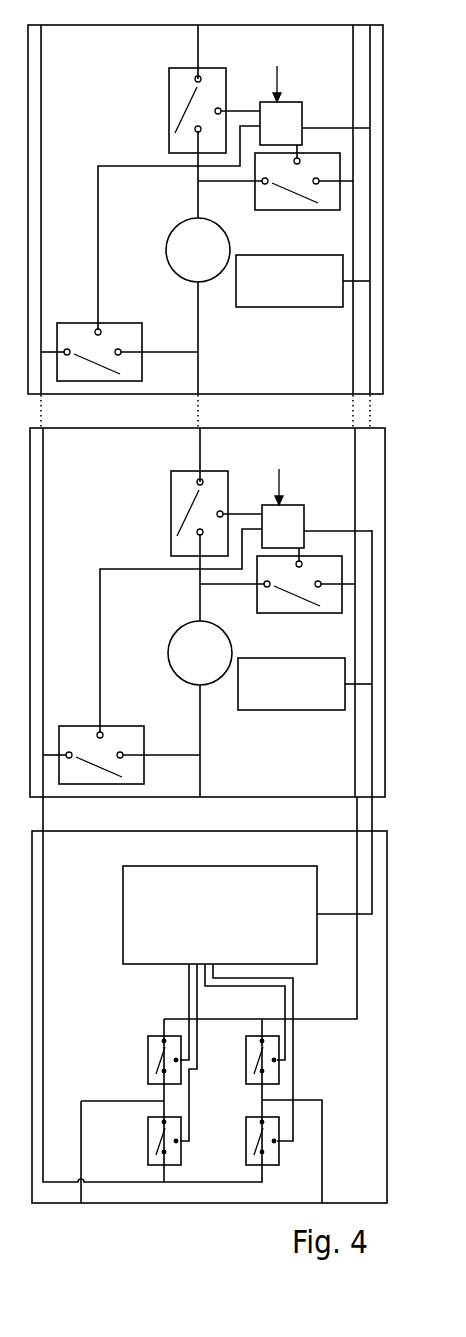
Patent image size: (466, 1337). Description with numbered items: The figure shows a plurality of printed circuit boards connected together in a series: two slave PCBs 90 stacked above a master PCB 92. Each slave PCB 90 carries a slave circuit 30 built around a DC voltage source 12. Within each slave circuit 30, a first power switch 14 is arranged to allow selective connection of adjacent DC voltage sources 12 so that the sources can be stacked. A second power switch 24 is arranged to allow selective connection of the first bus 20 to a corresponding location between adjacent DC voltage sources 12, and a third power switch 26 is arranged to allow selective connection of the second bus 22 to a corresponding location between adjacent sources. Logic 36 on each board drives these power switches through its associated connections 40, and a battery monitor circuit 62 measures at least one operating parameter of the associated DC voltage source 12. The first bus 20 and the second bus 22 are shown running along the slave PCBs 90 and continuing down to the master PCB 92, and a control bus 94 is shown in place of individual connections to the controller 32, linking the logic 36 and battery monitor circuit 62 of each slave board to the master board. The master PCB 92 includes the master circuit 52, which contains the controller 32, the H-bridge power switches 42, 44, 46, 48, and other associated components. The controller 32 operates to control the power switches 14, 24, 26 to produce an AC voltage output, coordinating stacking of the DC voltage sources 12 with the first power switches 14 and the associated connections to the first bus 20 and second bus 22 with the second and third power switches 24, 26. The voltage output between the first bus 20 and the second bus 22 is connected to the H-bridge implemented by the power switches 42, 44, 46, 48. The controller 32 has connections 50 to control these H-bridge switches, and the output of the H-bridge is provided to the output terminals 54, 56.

The DC voltage source 12 is at (166, 258).
The first power switch 14 is at (168, 108).
The first bus 20 is at (41, 137).
The second bus 22 is at (353, 362).
The second power switch 24 is at (78, 322).
The third power switch 26 is at (300, 214).
The slave circuit 30 is at (97, 75).
The controller 32 is at (265, 867).
The logic 36 is at (298, 103).
The associated connections 40 is at (242, 109).
The H-bridge power switch 42 is at (244, 1063).
The H-bridge power switch 44 is at (246, 1144).
The H-bridge power switch 46 is at (148, 1061).
The H-bridge power switch 48 is at (148, 1138).
The connections 50 is at (188, 996).
The master circuit 52 is at (97, 878).
The output terminal 54 is at (322, 1181).
The output terminal 56 is at (81, 1101).
The battery monitor circuit 62 is at (283, 308).
The slave PCB 90 is at (385, 73).
The master PCB 92 is at (388, 913).
The control bus 94 is at (372, 184).